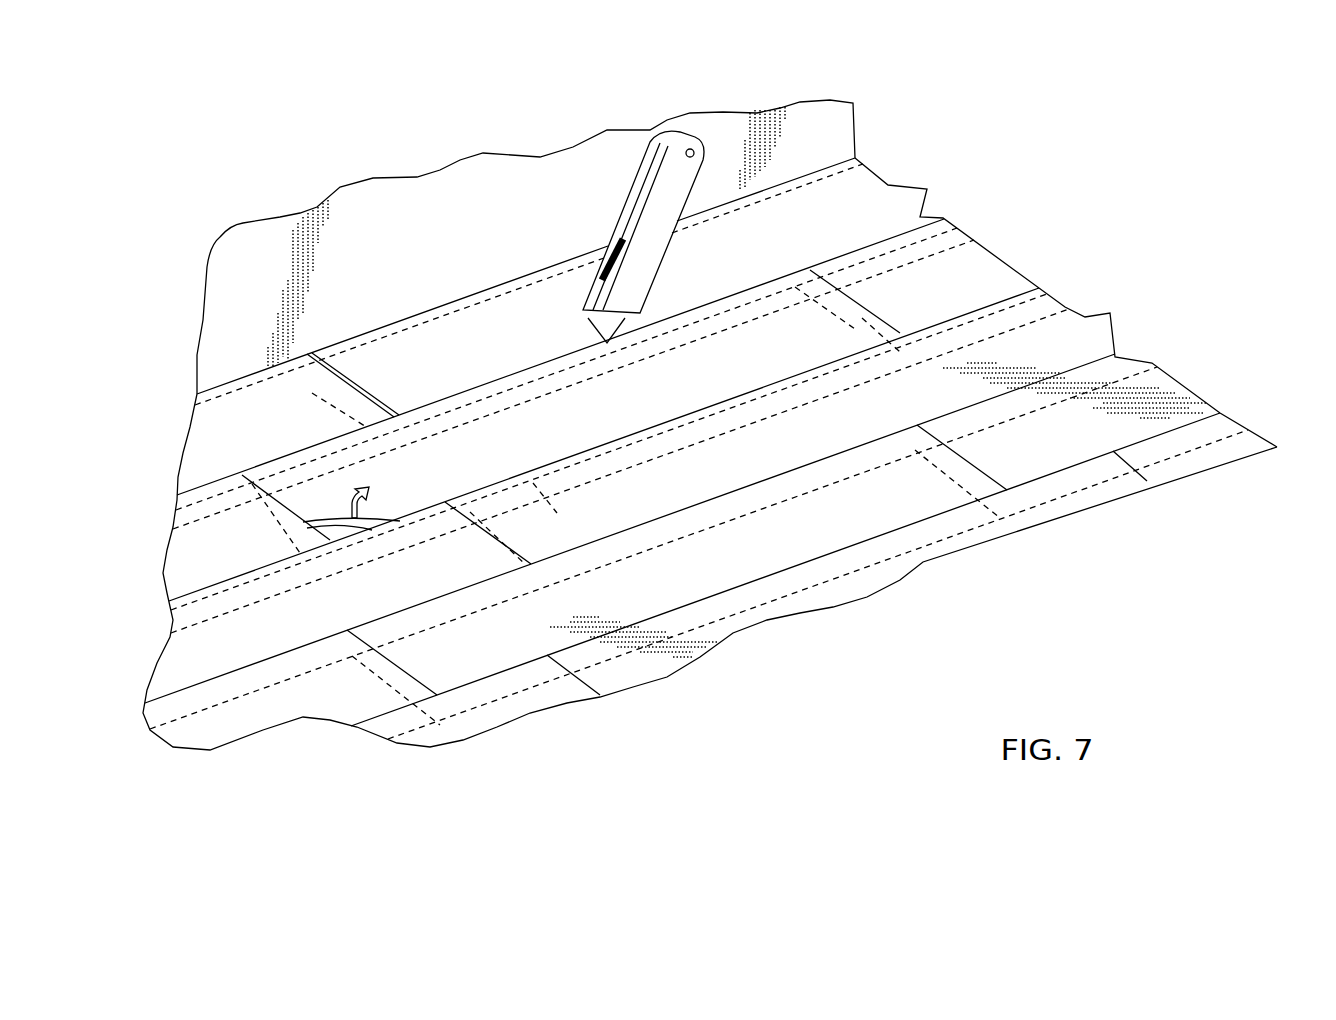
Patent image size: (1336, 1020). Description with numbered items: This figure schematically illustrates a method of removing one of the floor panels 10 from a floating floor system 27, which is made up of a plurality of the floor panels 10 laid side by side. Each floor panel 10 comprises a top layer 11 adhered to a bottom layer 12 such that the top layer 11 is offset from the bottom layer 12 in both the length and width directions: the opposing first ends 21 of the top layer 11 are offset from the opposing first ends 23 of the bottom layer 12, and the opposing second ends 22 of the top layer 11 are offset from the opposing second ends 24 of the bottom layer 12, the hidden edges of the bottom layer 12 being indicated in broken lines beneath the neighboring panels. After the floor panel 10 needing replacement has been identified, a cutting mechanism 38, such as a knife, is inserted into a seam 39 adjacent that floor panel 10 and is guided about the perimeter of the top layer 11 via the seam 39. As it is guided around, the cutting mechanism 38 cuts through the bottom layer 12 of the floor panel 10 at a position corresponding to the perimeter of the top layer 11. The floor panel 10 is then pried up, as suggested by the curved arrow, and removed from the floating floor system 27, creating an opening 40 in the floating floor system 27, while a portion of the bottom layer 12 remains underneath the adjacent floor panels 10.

The floor panel 10 is at (440, 305).
The top layer 11 is at (620, 412).
The bottom layer 12 is at (760, 407).
The first ends of the top layer 21 is at (853, 300).
The second ends of the top layer 22 is at (476, 380).
The first ends of the bottom layer 23 is at (706, 332).
The second ends of the bottom layer 24 is at (553, 500).
The floating floor system 27 is at (902, 143).
The cutting mechanism 38 is at (668, 162).
The seam 39 is at (540, 362).
The opening 40 is at (335, 525).